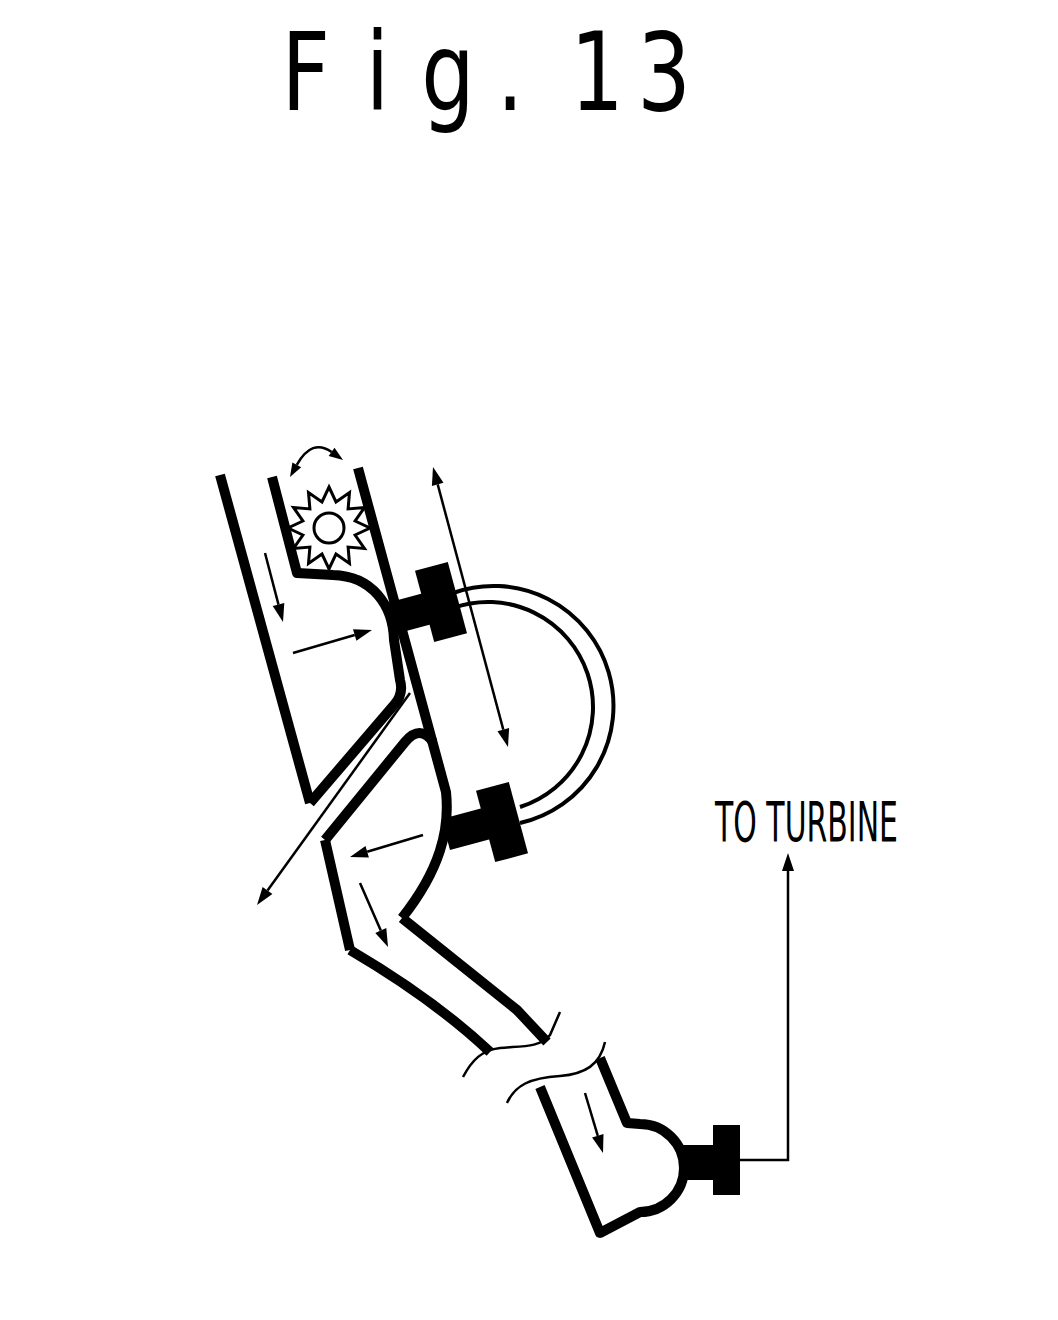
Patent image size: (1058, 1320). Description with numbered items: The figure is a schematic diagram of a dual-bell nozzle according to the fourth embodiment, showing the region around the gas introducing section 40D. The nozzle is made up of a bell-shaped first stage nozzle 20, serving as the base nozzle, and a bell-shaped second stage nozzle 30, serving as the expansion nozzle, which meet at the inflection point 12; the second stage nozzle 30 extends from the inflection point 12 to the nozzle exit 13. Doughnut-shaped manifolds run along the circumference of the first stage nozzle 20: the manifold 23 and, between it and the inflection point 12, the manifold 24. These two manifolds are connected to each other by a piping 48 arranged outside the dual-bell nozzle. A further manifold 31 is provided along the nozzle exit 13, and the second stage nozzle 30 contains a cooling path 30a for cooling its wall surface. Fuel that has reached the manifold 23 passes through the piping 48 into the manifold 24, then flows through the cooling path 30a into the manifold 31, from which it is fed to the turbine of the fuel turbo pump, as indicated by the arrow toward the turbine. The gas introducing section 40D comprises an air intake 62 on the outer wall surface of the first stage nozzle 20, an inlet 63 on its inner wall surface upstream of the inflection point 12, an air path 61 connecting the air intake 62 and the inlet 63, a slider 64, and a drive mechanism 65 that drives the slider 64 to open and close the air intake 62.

The inflection point 12 is at (413, 917).
The nozzle exit 13 is at (588, 1213).
The first stage nozzle 20 is at (232, 533).
The manifold 23 is at (382, 512).
The manifold 24 is at (453, 874).
The second stage nozzle 30 is at (450, 1017).
The cooling path 30a is at (528, 1012).
The manifold 31 is at (667, 1127).
The gas introducing section 40D is at (833, 552).
The piping 48 is at (600, 690).
The air path 61 is at (410, 740).
The air intake 62 is at (413, 680).
The inlet 63 is at (304, 858).
The slider 64 is at (372, 580).
The drive mechanism 65 is at (280, 512).